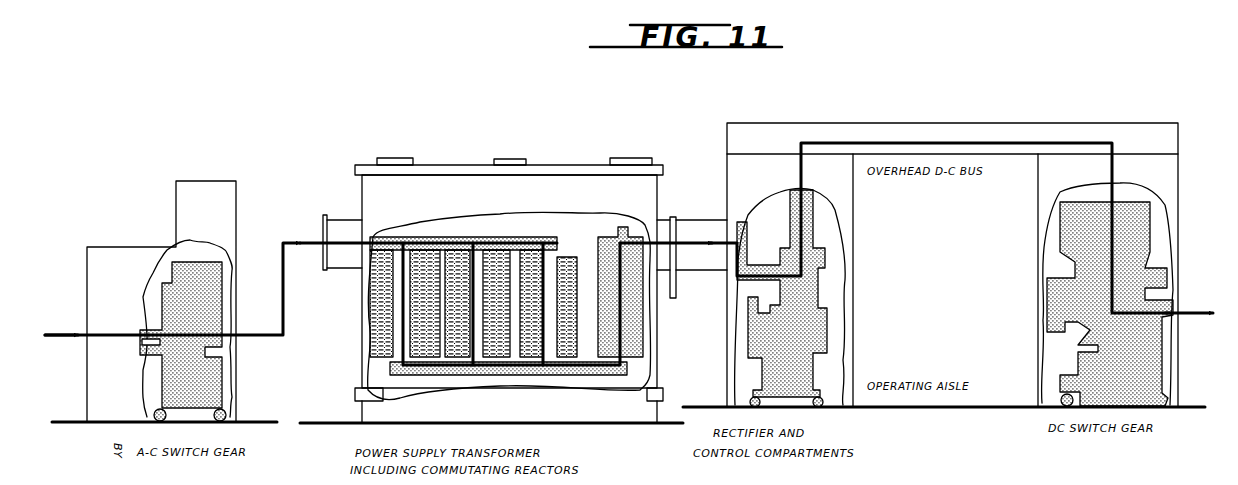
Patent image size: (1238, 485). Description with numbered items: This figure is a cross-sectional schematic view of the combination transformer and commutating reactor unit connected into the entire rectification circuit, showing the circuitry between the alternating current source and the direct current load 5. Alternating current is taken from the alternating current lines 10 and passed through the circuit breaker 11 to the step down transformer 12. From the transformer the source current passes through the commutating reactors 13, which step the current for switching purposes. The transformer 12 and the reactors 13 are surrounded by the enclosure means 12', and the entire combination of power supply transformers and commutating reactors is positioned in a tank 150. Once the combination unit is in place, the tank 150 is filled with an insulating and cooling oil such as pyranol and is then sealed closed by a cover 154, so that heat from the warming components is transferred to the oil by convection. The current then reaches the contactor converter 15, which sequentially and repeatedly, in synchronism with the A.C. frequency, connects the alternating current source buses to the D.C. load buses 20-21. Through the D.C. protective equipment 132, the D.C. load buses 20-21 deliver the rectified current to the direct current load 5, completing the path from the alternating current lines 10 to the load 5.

The alternating current lines 10 is at (61, 337).
The circuit breaker 11 is at (228, 258).
The step down transformer 12 is at (463, 284).
The enclosure means 12' is at (509, 298).
The commutating reactors 13 is at (607, 237).
The contactor converter 15 is at (807, 298).
The tank 150 is at (430, 165).
The cover 154 is at (615, 175).
The D.C. protective equipment 132 is at (1142, 236).
The direct current load 5 is at (1193, 296).
The D.C. load buses 20-21 is at (1192, 316).